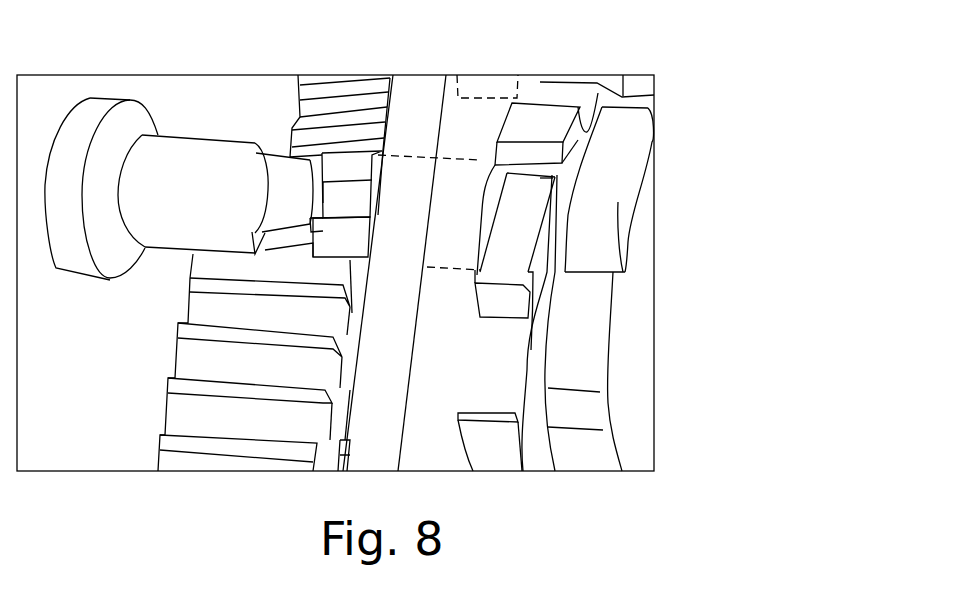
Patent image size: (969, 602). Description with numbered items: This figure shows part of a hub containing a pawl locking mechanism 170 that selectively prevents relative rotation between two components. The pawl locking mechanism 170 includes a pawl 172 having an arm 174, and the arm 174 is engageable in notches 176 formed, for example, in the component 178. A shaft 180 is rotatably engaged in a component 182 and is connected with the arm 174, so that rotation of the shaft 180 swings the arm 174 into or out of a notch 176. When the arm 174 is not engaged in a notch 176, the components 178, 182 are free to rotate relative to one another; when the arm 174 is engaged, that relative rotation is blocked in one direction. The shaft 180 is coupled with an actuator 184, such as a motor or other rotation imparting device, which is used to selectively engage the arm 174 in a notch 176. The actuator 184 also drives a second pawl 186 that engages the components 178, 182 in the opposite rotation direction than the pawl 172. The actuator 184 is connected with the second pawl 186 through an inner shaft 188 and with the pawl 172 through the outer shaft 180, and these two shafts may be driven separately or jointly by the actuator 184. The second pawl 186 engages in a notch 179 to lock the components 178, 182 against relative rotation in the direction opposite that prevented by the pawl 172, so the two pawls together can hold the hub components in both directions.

The pawl locking mechanism 170 is at (556, 243).
The pawl 172 is at (512, 222).
The arm 174 is at (490, 295).
The notches 176 is at (495, 417).
The component 178 is at (505, 370).
The notch 179 is at (583, 415).
The shaft 180 is at (335, 153).
The component 182 is at (417, 133).
The actuator 184 is at (80, 258).
The second pawl 186 is at (608, 152).
The inner shaft 188 is at (320, 175).